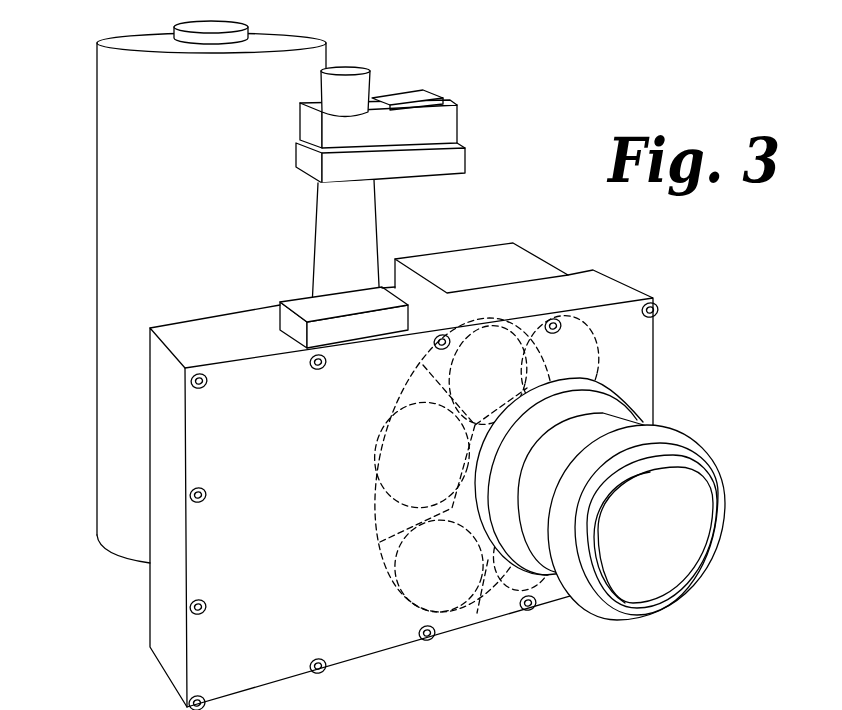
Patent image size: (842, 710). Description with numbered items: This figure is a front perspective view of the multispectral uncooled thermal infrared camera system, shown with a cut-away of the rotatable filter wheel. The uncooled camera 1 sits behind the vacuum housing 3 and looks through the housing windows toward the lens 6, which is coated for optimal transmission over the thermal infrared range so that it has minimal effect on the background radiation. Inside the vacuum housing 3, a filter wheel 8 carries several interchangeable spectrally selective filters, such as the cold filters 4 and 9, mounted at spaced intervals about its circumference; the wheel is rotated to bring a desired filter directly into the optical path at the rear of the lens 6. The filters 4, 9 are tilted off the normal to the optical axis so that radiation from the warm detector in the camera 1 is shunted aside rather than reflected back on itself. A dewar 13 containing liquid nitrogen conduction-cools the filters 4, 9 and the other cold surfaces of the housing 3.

The uncooled camera 1 is at (465, 263).
The vacuum housing 3 is at (598, 292).
The cold filter 4 is at (562, 357).
The lens 6 is at (690, 498).
The filter wheel 8 is at (380, 542).
The cold filter 9 is at (417, 448).
The dewar 13 is at (116, 123).